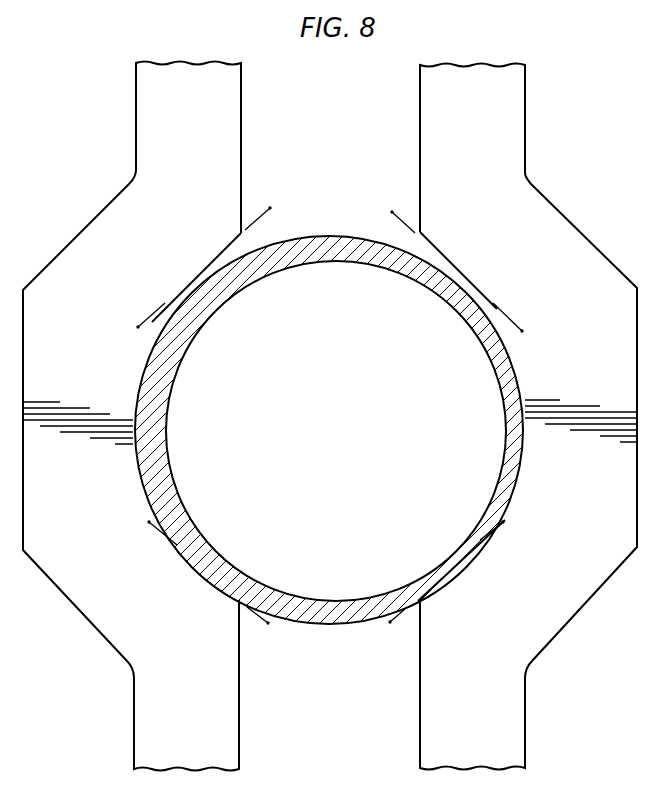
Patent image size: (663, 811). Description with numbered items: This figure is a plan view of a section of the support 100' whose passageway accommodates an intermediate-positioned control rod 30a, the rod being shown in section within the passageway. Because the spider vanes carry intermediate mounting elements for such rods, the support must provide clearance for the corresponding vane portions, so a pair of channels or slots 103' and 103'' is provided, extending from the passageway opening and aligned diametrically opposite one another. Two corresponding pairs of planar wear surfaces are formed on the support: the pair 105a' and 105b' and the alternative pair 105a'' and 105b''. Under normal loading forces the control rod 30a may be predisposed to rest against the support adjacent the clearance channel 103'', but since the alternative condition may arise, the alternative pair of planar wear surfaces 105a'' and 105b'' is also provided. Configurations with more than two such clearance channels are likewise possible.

The support 100' is at (330, 416).
The intermediate control rod 30a is at (174, 378).
The clearance channel 103'' is at (306, 93).
The clearance channel 103' is at (284, 758).
The planar wear surface 105a'' is at (204, 267).
The planar wear surface 105b'' is at (457, 271).
The planar wear surface 105a' is at (208, 572).
The planar wear surface 105b' is at (463, 571).